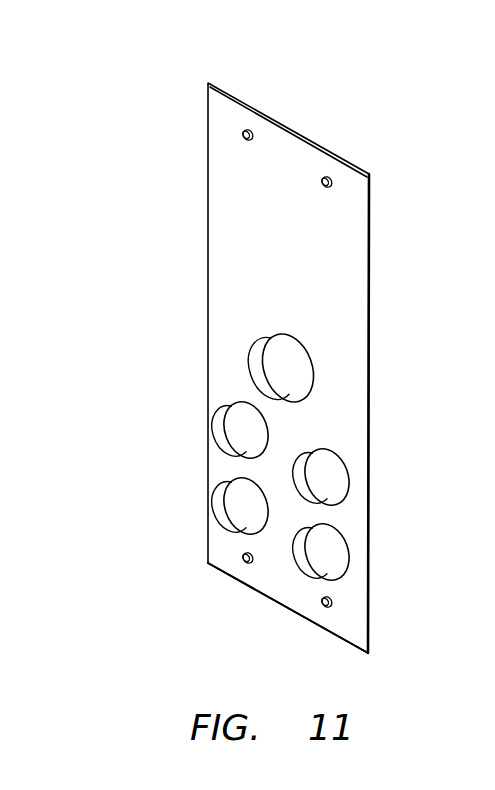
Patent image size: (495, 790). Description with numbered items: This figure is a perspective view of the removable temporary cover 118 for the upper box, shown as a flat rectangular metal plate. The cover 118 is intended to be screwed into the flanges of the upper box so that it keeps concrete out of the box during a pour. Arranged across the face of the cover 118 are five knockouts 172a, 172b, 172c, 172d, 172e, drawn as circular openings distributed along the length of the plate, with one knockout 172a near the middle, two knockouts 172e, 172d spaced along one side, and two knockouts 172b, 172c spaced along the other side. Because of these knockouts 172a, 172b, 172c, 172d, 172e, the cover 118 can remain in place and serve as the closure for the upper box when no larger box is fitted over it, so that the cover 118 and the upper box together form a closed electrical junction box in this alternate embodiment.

The temporary cover 118 is at (240, 293).
The knockout 172a is at (289, 360).
The knockout 172b is at (330, 481).
The knockout 172c is at (330, 557).
The knockout 172d is at (247, 505).
The knockout 172e is at (247, 428).